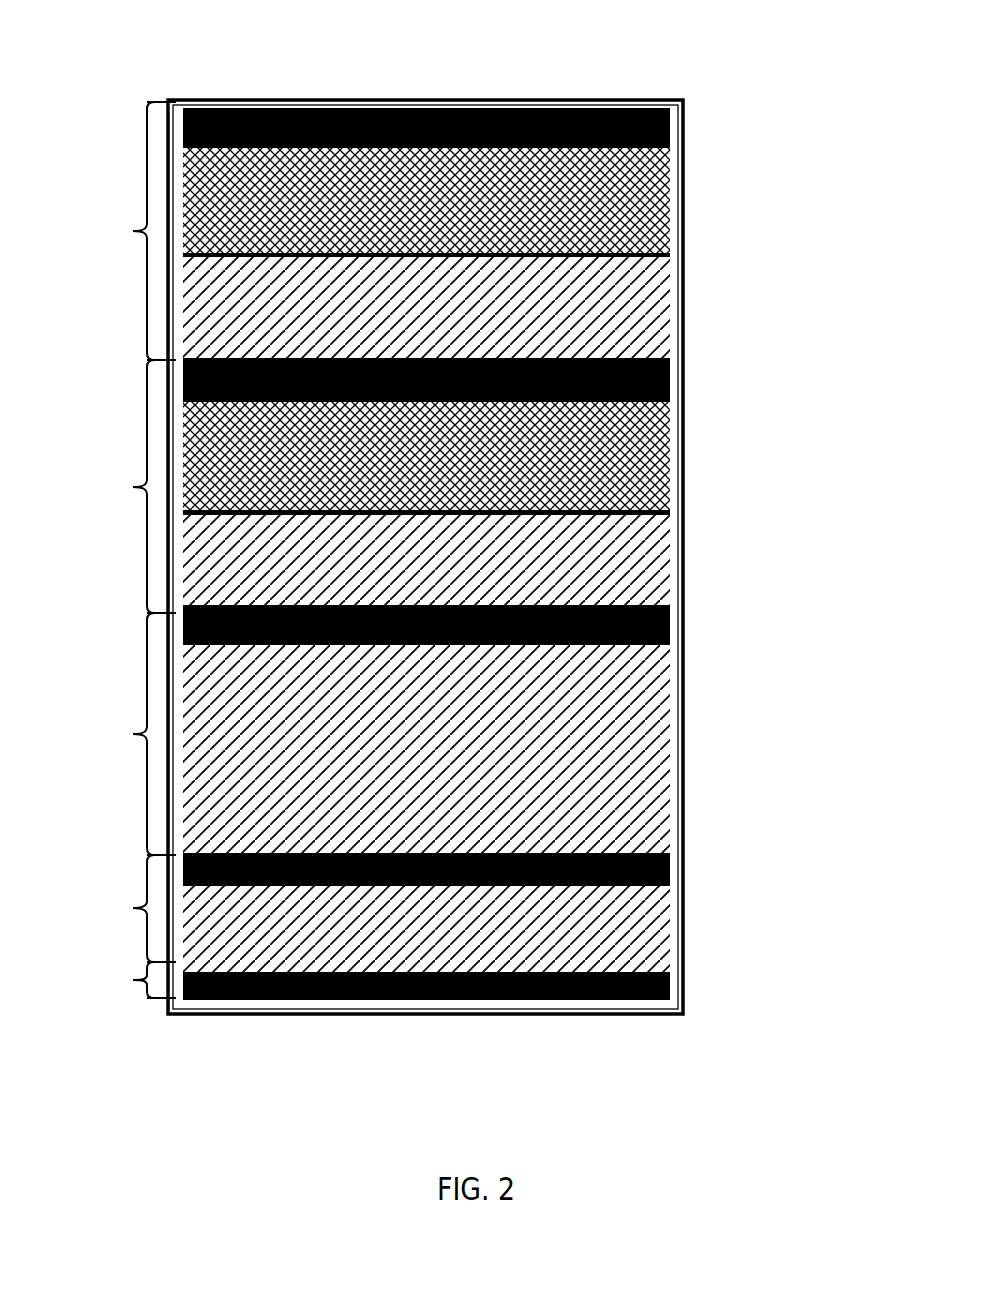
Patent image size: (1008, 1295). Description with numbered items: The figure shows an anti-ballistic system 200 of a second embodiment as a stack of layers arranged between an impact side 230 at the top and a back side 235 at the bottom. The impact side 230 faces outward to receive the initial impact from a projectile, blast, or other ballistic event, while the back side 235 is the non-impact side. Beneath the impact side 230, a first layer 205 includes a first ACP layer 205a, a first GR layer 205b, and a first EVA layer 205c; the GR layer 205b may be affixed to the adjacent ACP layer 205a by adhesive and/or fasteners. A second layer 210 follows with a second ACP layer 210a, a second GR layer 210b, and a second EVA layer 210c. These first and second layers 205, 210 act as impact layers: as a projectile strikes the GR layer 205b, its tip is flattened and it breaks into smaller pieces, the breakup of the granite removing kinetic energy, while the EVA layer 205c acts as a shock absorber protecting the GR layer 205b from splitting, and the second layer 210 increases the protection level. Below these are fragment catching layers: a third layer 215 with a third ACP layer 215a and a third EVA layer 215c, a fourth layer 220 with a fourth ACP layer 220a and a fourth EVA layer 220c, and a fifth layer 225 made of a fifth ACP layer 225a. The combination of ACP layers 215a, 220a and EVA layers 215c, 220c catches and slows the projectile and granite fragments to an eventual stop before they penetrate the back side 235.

The anti-ballistic system 200 is at (670, 71).
The first layer 205 is at (142, 200).
The first ACP layer 205a is at (768, 118).
The first GR layer 205b is at (810, 197).
The first EVA layer 205c is at (766, 302).
The second layer 210 is at (142, 442).
The second ACP layer 210a is at (792, 375).
The second GR layer 210b is at (808, 447).
The second EVA layer 210c is at (758, 547).
The third layer 215 is at (142, 648).
The third ACP layer 215a is at (768, 628).
The third EVA layer 215c is at (758, 745).
The fourth layer 220 is at (142, 886).
The fourth ACP layer 220a is at (766, 855).
The fourth EVA layer 220c is at (784, 927).
The fifth layer 225 is at (142, 973).
The fifth ACP layer 225a is at (792, 983).
The impact side 230 is at (347, 73).
The back side 235 is at (540, 1043).